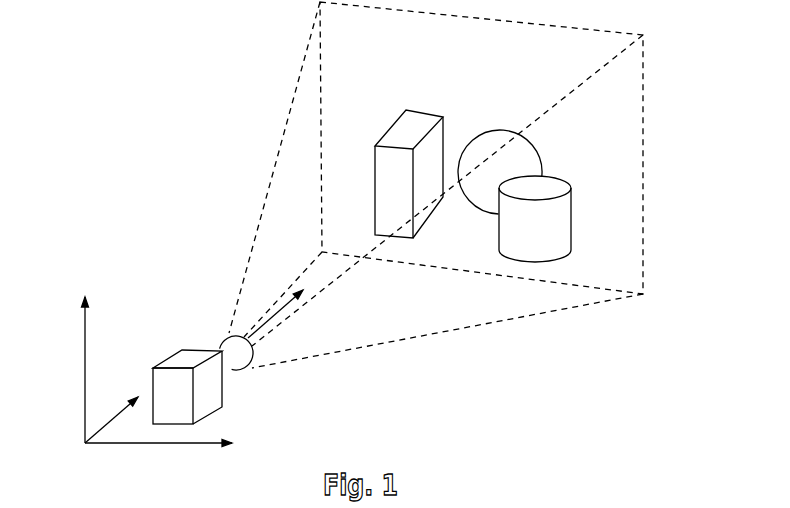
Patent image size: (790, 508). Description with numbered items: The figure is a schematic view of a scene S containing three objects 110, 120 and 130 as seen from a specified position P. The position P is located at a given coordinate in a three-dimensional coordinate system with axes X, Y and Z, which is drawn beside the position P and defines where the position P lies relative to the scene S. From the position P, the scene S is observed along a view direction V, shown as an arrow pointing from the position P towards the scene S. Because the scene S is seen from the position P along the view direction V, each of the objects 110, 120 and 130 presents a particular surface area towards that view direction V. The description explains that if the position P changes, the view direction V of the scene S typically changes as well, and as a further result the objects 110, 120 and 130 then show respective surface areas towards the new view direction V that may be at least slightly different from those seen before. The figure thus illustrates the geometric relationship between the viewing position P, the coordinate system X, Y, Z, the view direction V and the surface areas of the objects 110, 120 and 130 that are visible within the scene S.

The object 110 is at (410, 125).
The object 120 is at (493, 134).
The object 130 is at (546, 236).
The specified position P is at (175, 393).
The scene S is at (605, 133).
The view direction V is at (286, 314).
The coordinate system axis X is at (161, 466).
The coordinate system axis Y is at (70, 363).
The coordinate system axis Z is at (111, 403).